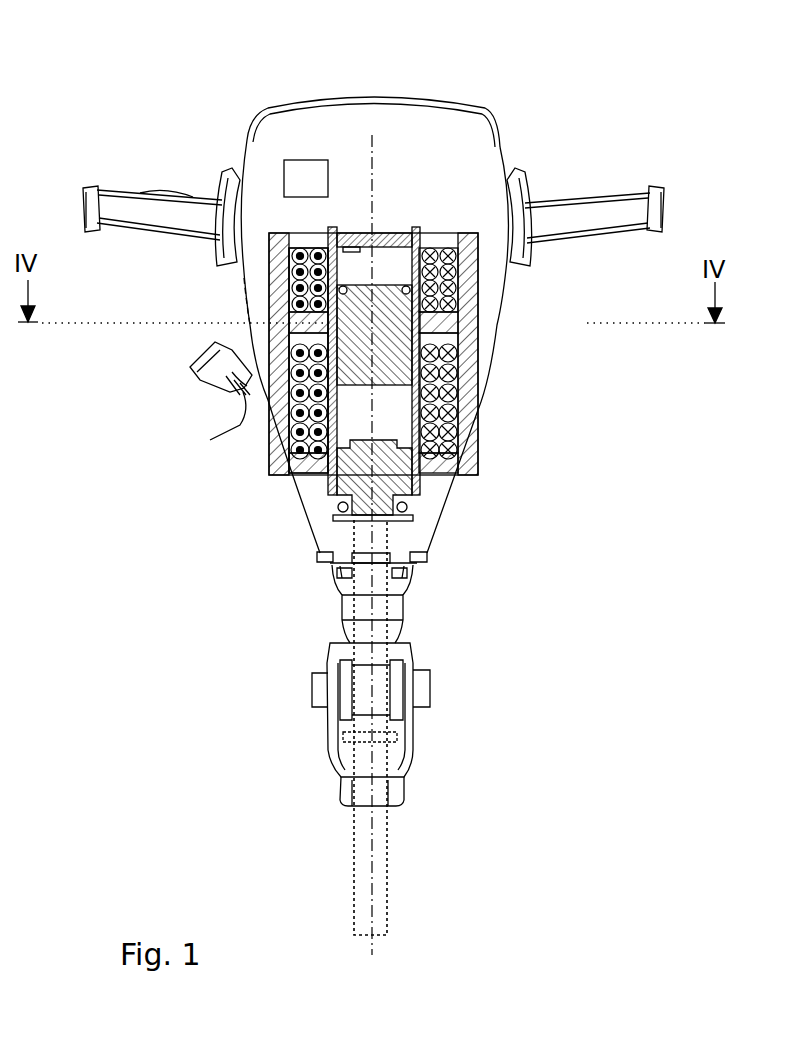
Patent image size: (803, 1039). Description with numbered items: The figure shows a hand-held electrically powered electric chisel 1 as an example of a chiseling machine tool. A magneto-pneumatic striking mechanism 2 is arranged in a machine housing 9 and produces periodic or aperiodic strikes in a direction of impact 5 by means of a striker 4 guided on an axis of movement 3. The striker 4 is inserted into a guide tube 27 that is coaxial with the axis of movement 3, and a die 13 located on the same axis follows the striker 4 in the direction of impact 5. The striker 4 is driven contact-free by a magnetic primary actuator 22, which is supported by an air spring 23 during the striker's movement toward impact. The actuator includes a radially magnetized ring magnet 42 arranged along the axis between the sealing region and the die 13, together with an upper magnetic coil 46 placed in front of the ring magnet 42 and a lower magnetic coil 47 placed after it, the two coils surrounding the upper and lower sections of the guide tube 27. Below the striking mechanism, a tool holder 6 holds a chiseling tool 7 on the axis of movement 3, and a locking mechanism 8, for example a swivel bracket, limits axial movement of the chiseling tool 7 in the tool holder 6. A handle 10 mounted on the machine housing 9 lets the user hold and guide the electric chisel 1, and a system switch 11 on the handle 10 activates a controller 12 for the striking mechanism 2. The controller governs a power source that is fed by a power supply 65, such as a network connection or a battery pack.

The electric chisel 1 is at (100, 72).
The magneto-pneumatic striking mechanism 2 is at (366, 374).
The axis of movement 3 is at (372, 835).
The striker 4 is at (393, 327).
The direction of impact 5 is at (457, 773).
The tool holder 6 is at (365, 690).
The chiseling tool 7 is at (355, 848).
The locking mechanism 8 is at (342, 782).
The machine housing 9 is at (497, 165).
The handle 10 is at (602, 205).
The system switch 11 is at (160, 192).
The controller 12 is at (290, 166).
The die 13 is at (392, 467).
The magnetic primary actuator 22 is at (102, 288).
The air spring 23 is at (390, 270).
The guide tube 27 is at (412, 378).
The ring magnet 42 is at (300, 322).
The upper magnetic coil 46 is at (300, 292).
The lower magnetic coil 47 is at (300, 397).
The power supply 65 is at (233, 392).